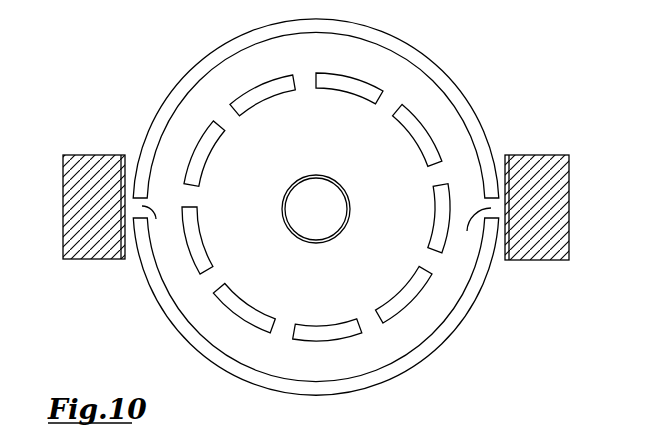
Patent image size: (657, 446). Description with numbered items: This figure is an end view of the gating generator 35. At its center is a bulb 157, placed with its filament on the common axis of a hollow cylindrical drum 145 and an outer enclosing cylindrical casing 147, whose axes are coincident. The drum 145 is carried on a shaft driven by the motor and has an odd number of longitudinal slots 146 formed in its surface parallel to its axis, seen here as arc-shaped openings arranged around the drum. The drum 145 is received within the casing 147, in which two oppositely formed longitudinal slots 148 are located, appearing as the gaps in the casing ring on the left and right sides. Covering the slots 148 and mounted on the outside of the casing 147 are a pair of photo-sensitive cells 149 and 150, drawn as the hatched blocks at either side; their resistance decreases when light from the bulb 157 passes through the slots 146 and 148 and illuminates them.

The gating generator 35 is at (75, 59).
The hollow cylindrical drum 145 is at (318, 323).
The longitudinal slots 146 is at (432, 208).
The outer enclosing cylindrical casing 147 is at (479, 115).
The longitudinal slots 148 is at (316, 230).
The photo-sensitive cell 149 is at (520, 261).
The photo-sensitive cell 150 is at (97, 260).
The bulb 157 is at (317, 244).